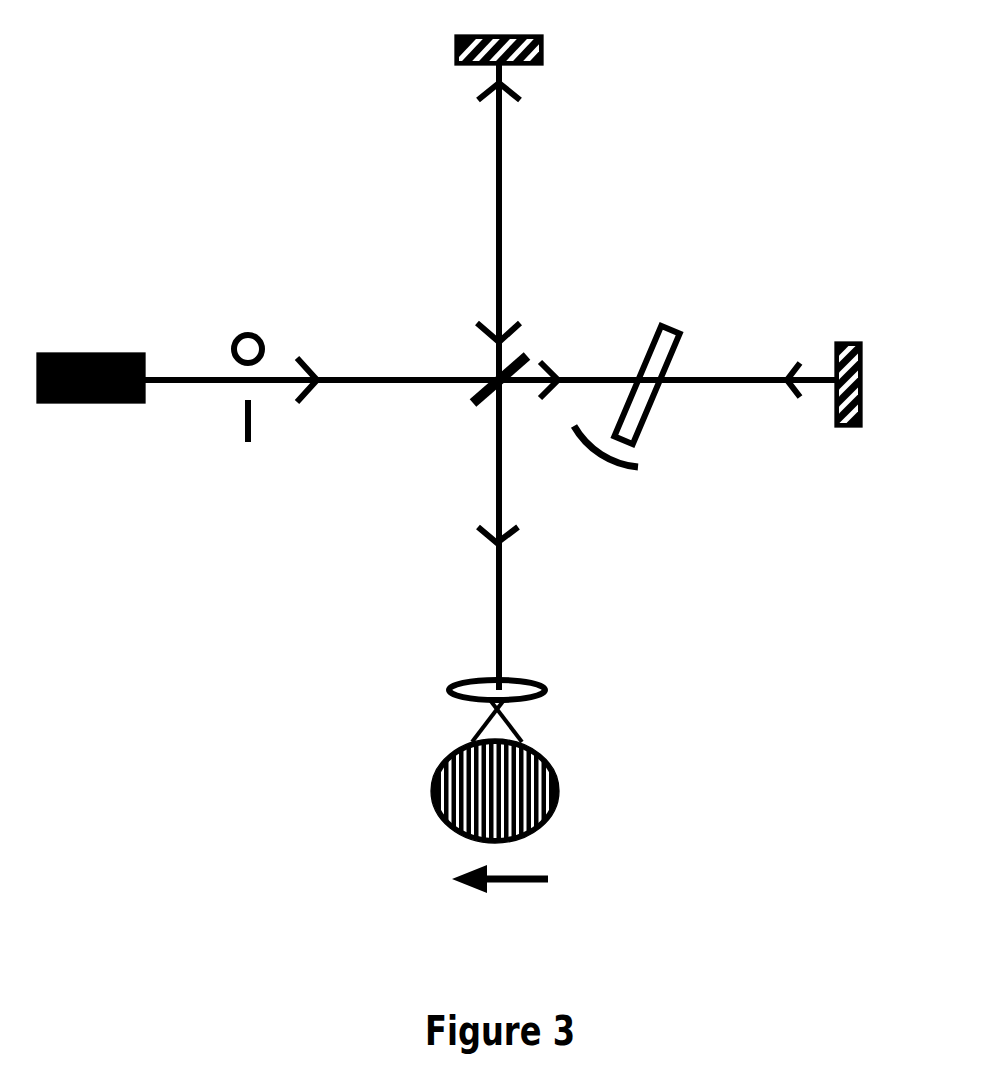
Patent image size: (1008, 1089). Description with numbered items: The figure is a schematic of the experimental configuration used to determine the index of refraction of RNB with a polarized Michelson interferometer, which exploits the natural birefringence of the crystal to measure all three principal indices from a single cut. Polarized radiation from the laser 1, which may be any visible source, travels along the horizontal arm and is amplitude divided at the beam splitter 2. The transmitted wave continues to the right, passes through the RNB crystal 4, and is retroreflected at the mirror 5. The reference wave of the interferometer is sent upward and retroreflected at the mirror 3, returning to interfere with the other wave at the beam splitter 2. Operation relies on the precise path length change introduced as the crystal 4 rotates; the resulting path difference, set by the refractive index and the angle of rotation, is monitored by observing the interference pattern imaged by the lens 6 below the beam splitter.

The laser 1 is at (80, 353).
The beam splitter 2 is at (522, 360).
The mirror 3 is at (457, 44).
The RNB crystal 4 is at (640, 422).
The mirror 5 is at (858, 365).
The lens 6 is at (533, 682).